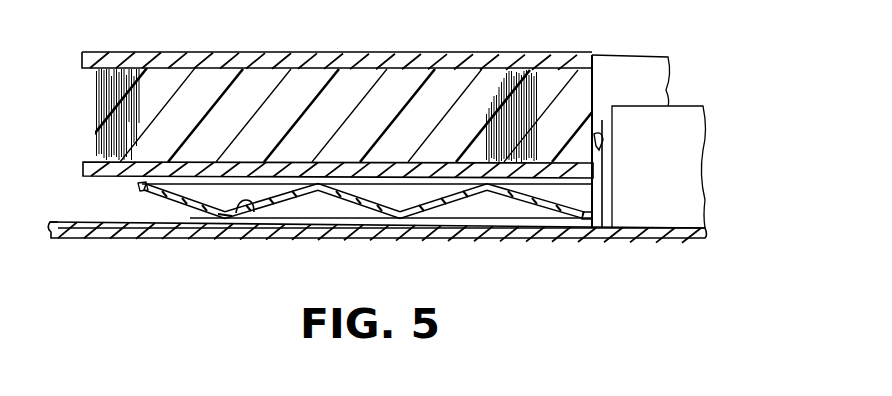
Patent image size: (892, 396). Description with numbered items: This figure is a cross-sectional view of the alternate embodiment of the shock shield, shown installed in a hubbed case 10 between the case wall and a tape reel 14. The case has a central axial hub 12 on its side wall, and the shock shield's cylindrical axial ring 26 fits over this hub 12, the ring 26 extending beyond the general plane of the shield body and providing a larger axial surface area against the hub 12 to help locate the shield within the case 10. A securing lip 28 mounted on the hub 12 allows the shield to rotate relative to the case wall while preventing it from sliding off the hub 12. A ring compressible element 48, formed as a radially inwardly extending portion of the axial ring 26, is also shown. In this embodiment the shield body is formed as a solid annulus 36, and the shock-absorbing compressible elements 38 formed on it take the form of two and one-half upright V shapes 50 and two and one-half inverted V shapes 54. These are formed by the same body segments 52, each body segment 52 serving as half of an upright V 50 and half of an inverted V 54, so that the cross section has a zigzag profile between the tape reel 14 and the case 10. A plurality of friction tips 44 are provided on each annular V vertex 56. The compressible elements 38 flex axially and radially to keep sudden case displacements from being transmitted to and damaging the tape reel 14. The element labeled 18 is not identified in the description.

The hubbed case 10 is at (633, 245).
The central axial hub 12 is at (706, 132).
The tape reel 14 is at (130, 70).
The end wall 18 is at (596, 80).
The cylindrical axial ring 26 is at (600, 200).
The securing lip 28 is at (603, 122).
The solid annulus 36 is at (141, 187).
The compressible elements 38 is at (305, 183).
The friction tips 44 is at (240, 222).
The ring compressible element 48 is at (605, 142).
The upright V shapes 50 is at (222, 199).
The body segments 52 is at (192, 203).
The inverted V shapes 54 is at (342, 201).
The annular V vertex 56 is at (255, 214).